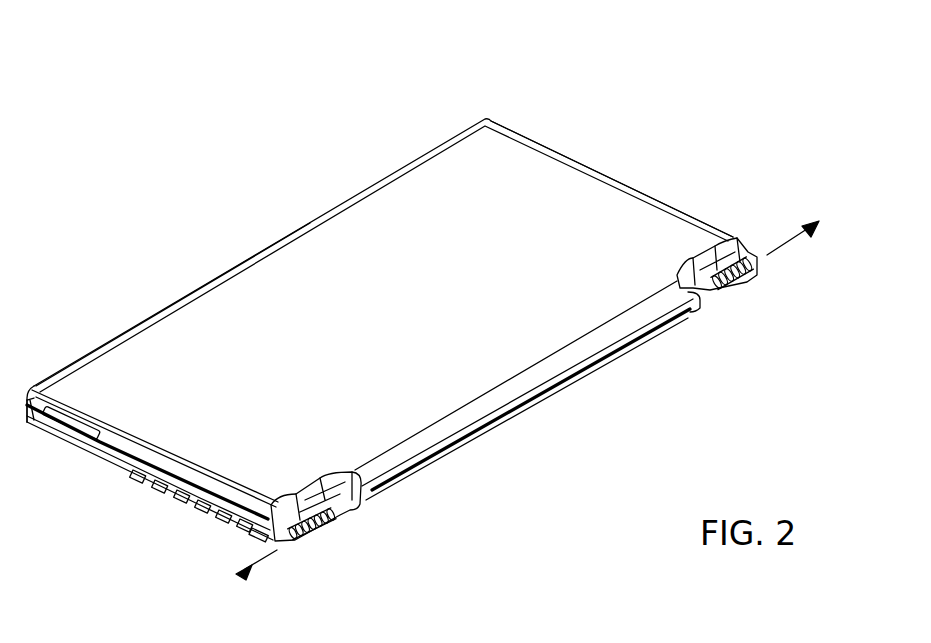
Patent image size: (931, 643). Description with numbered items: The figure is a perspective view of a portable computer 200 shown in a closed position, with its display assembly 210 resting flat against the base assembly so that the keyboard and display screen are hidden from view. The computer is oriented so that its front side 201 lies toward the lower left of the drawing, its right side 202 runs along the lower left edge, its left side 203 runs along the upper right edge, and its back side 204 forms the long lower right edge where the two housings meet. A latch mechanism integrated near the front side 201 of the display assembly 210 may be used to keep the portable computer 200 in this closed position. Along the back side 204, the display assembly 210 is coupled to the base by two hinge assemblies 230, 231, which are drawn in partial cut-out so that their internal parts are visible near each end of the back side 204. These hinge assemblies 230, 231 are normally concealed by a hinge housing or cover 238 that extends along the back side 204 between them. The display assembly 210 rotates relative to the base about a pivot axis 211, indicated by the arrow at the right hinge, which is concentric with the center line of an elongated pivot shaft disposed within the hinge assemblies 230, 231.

The portable computer 200 is at (163, 68).
The front side 201 is at (195, 290).
The right side 202 is at (140, 477).
The left side 203 is at (592, 163).
The back side 204 is at (487, 430).
The display assembly 210 is at (445, 177).
The pivot axis 211 is at (770, 250).
The hinge assembly 230 is at (304, 548).
The hinge assembly 231 is at (769, 277).
The hinge housing or cover 238 is at (558, 382).